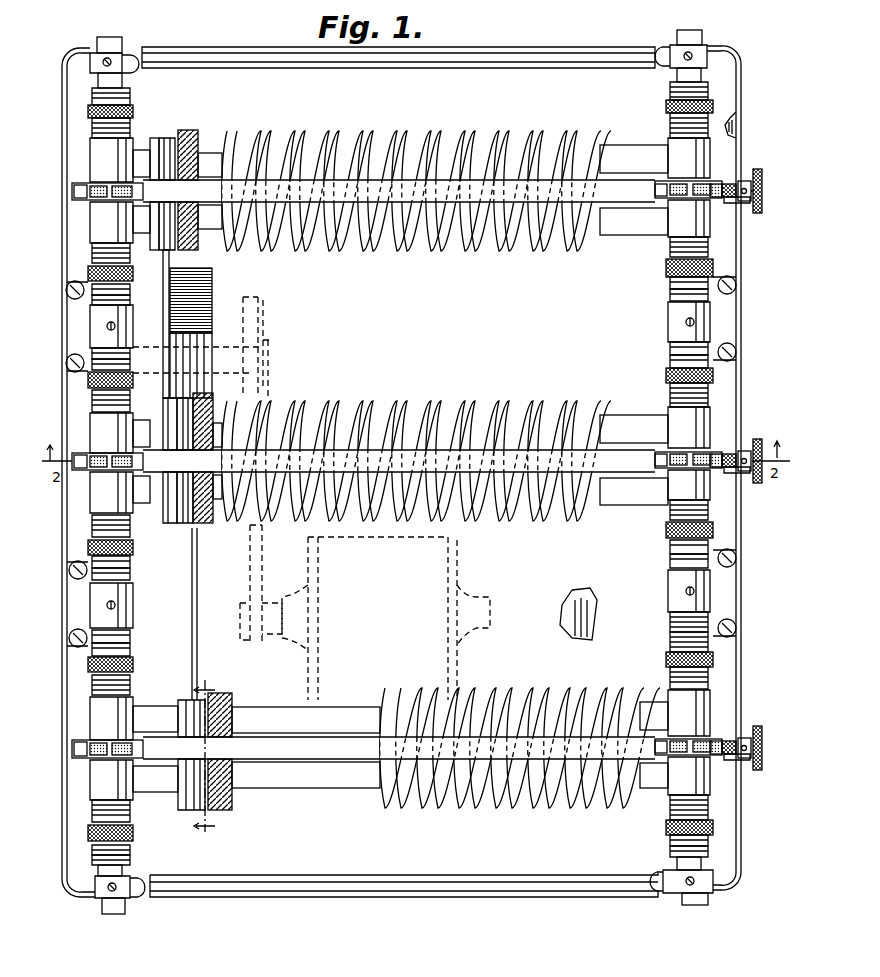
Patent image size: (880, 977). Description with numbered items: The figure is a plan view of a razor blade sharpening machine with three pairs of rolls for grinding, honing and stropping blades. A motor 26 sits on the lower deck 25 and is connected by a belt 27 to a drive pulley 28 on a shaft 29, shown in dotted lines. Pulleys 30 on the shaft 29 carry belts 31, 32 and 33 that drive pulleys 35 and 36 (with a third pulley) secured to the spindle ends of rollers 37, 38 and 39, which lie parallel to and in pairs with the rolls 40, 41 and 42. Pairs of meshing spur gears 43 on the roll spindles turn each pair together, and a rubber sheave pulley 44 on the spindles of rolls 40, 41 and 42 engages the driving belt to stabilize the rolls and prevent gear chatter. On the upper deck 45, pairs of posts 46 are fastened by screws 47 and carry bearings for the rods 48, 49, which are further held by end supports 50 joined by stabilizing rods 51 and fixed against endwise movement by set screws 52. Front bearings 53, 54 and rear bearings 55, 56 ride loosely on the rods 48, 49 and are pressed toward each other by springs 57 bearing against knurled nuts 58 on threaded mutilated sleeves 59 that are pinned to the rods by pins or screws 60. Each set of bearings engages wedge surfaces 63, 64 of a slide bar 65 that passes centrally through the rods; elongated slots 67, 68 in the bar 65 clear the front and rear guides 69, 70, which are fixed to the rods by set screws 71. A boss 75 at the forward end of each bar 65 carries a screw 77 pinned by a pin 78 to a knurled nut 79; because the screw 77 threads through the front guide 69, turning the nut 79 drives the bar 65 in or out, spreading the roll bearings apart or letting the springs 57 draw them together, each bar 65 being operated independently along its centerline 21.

The center line of shaft 21 is at (211, 747).
The lower deck 25 is at (200, 300).
The motor 26 is at (450, 585).
The belt 27 is at (256, 297).
The drive pulley 28 is at (263, 305).
The shaft 29 is at (270, 360).
The pulleys 30 is at (200, 350).
The belt 31 is at (197, 590).
The belt 32 is at (168, 523).
The belt 33 is at (168, 138).
The pulley 35 is at (180, 520).
The pulley 36 is at (154, 138).
The roller 37 is at (466, 805).
The roller 38 is at (528, 515).
The roller 39 is at (474, 240).
The roll 40 is at (476, 690).
The roll 41 is at (468, 400).
The roll 42 is at (470, 133).
The meshing spur gears 43 is at (190, 132).
The rubber sheave pulley 44 is at (182, 700).
The upper deck 45 is at (742, 92).
The posts 46 is at (90, 324).
The screws 47 is at (78, 281).
The rod 48 is at (692, 467).
The rod 49 is at (112, 37).
The end supports 50 is at (128, 53).
The stabilizing rods 51 is at (404, 68).
The set screws 52 is at (104, 60).
The bearing 53 is at (670, 247).
The bearing 54 is at (670, 147).
The bearing 55 is at (92, 245).
The bearing 56 is at (90, 143).
The springs 57 is at (92, 128).
The knurled nuts 58 is at (133, 273).
The threaded mutilated sleeves 59 is at (130, 289).
The pins or screws 60 is at (130, 300).
The wedge surface 63 is at (668, 228).
The wedge surface 64 is at (86, 183).
The slide bar 65 is at (542, 695).
The elongated slot 67 is at (660, 184).
The elongated slot 68 is at (76, 185).
The front guide 69 is at (684, 181).
The rear guide 70 is at (111, 501).
The set screws 71 is at (135, 185).
The boss 75 is at (736, 203).
The screw 77 is at (729, 184).
The pin 78 is at (746, 181).
The knurled nut 79 is at (760, 205).